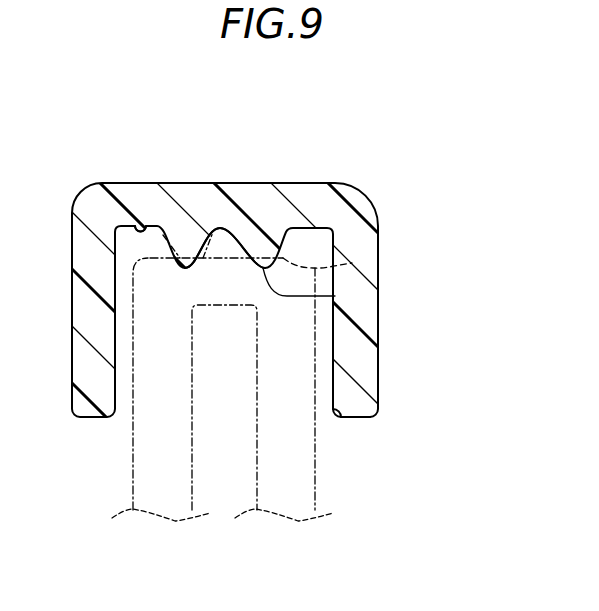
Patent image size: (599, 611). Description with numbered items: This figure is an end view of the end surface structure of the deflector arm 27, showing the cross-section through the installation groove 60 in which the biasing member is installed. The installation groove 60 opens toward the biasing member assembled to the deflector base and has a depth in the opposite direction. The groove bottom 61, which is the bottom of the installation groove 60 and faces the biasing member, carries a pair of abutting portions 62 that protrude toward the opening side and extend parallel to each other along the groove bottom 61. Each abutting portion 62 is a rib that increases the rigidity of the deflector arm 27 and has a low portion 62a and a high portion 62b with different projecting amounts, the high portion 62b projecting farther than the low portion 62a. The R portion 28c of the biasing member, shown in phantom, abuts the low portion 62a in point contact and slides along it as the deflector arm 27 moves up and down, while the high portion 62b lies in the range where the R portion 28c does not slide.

The deflector arm 27 is at (203, 190).
The R portion 28c is at (253, 228).
The groove bottom 61 is at (142, 221).
The abutting portion 62 is at (447, 251).
The low portion 62a is at (352, 263).
The high portion 62b is at (335, 296).
The installation groove 60 is at (333, 394).